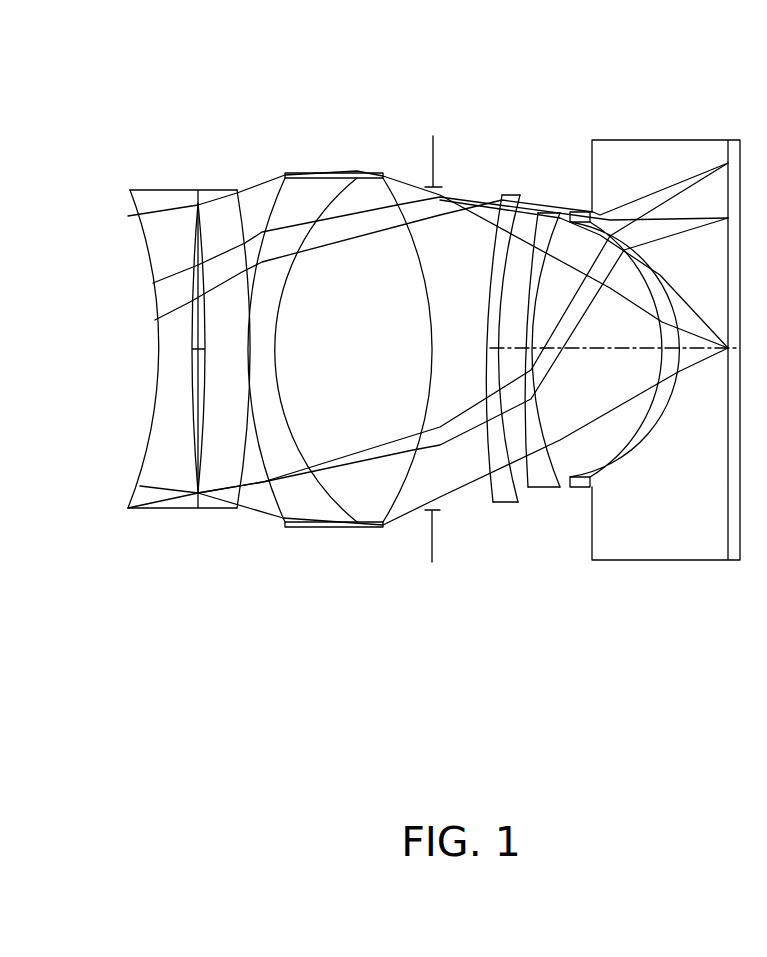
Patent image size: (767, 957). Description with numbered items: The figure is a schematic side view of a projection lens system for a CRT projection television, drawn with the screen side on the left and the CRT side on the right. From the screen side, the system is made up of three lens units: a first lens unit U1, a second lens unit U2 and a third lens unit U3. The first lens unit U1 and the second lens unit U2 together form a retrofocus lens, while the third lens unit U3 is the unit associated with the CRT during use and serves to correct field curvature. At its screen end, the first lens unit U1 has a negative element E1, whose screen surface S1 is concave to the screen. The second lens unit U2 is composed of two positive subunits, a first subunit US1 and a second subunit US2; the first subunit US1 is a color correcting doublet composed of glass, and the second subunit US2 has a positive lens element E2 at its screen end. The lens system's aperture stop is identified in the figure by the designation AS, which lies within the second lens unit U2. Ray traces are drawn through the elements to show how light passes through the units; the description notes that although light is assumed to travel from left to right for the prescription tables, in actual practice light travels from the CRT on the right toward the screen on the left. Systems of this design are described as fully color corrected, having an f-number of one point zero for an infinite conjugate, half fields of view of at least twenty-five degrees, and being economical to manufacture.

The screen surface S1 is at (155, 381).
The negative element E1 is at (158, 448).
The positive lens element E2 is at (510, 502).
The aperture stop AS is at (433, 177).
The first lens unit U1 is at (135, 537).
The second lens unit U2 is at (272, 577).
The third lens unit U3 is at (737, 577).
The first subunit US1 is at (387, 146).
The second subunit US2 is at (567, 168).